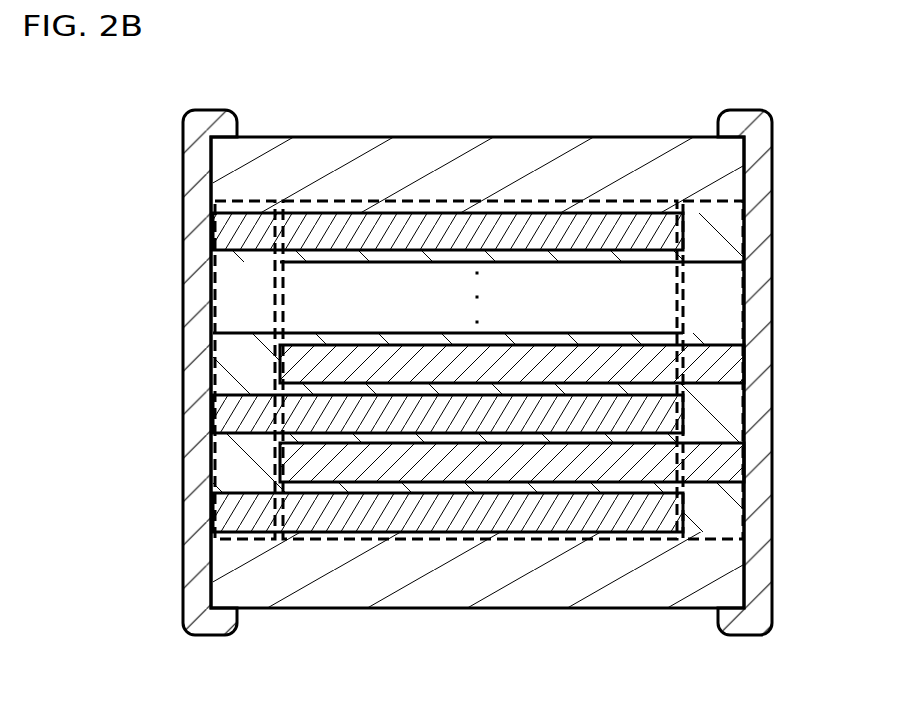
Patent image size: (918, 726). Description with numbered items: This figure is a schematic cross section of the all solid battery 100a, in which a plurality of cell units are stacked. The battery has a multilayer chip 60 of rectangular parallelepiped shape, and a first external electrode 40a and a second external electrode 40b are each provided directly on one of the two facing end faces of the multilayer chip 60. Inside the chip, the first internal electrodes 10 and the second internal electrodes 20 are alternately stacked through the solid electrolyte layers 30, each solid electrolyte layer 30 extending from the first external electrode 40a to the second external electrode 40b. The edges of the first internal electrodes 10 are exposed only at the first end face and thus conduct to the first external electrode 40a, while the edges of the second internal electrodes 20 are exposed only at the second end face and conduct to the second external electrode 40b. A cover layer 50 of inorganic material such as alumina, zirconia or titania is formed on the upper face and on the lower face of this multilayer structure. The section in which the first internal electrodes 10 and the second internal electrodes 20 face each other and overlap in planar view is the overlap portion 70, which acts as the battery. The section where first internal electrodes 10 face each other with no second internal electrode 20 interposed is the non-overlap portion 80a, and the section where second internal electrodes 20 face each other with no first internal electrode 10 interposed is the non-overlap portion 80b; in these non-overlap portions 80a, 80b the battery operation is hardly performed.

The first internal electrode 10 is at (237, 418).
The second internal electrode 20 is at (722, 368).
The solid electrolyte layer 30 is at (376, 490).
The first external electrode 40a is at (183, 243).
The second external electrode 40b is at (773, 243).
The cover layer 50 is at (450, 155).
The multilayer chip 60 is at (597, 113).
The overlap portion 70 is at (362, 200).
The non-overlap portion 80a is at (249, 200).
The non-overlap portion 80b is at (693, 200).
The all solid battery 100a is at (874, 49).